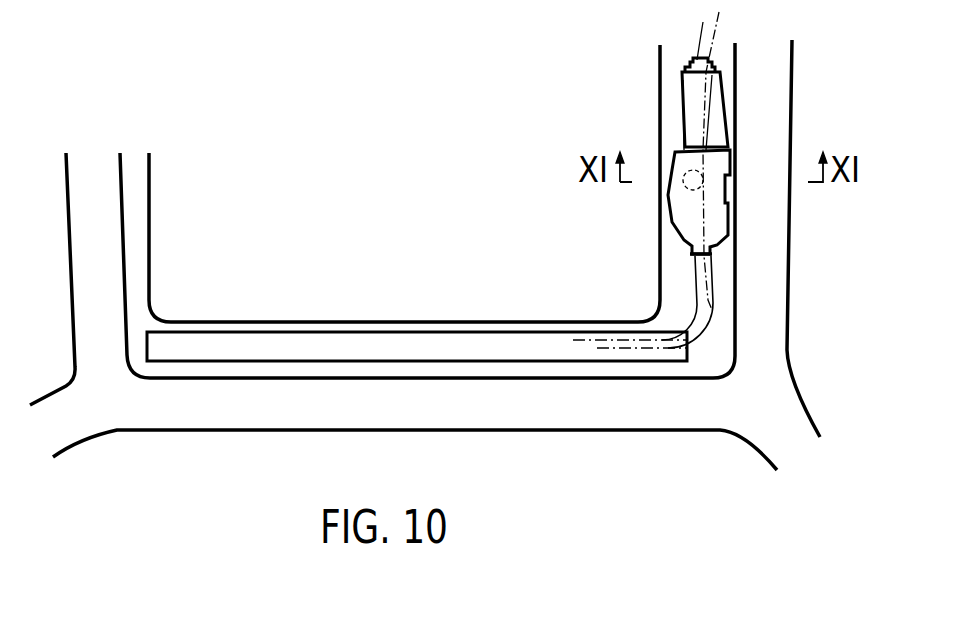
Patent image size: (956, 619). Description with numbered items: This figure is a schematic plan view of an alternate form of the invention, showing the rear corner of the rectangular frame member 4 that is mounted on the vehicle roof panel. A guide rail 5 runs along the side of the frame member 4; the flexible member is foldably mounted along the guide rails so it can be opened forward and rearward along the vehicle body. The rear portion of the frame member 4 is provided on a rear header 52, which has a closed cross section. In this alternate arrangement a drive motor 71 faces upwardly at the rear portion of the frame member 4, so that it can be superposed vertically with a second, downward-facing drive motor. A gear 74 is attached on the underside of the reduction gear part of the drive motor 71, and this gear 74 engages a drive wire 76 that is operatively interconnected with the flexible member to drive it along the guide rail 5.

The frame member 4 is at (656, 90).
The guide rail 5 is at (377, 345).
The rear header 52 is at (783, 120).
The drive motor 71 is at (722, 90).
The gear 74 is at (695, 190).
The drive wire 76 is at (700, 287).